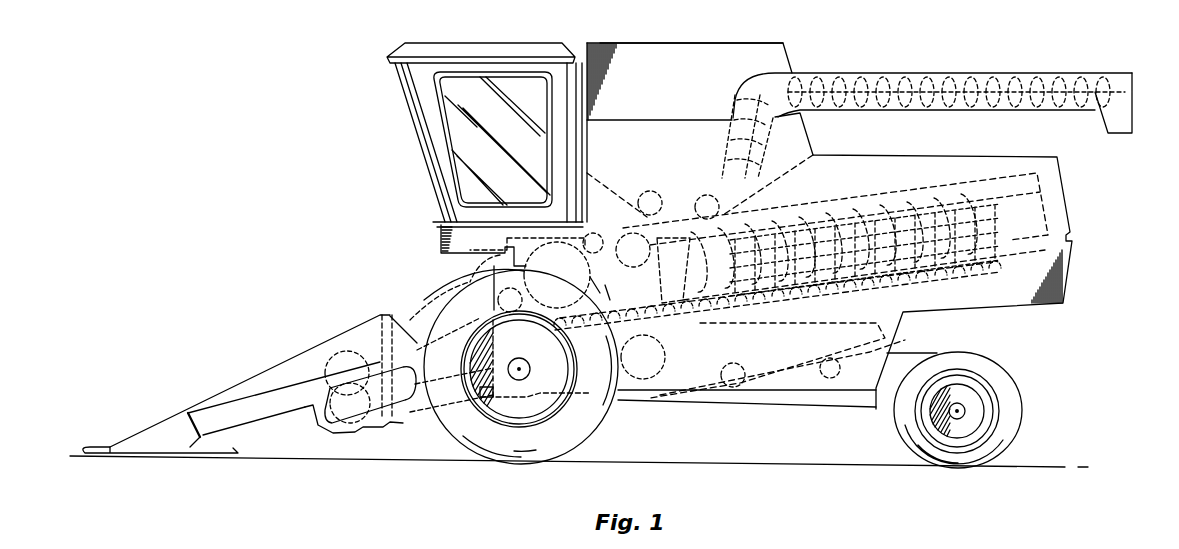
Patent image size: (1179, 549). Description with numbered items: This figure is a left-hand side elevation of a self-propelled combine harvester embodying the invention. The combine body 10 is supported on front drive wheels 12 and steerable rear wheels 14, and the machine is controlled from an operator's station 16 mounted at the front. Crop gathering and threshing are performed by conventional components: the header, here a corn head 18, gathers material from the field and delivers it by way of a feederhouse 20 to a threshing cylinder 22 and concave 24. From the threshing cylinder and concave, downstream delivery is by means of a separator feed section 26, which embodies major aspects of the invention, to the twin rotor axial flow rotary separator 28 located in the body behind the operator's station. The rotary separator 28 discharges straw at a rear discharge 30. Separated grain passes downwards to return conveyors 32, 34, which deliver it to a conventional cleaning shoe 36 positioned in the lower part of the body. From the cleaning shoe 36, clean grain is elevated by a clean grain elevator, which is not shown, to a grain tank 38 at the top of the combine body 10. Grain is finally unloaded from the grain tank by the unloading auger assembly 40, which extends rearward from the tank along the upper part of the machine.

The combine body 10 is at (975, 143).
The front drive wheels 12 is at (600, 430).
The steerable rear wheels 14 is at (1022, 412).
The operator's station 16 is at (403, 97).
The corn head 18 is at (270, 355).
The feederhouse 20 is at (431, 287).
The threshing cylinder 22 is at (503, 238).
The concave 24 is at (777, 284).
The separator feed section 26 is at (723, 233).
The twin rotor axial flow rotary separator 28 is at (861, 198).
The rear discharge 30 is at (1040, 212).
The return conveyor 32 is at (535, 372).
The return conveyor 34 is at (938, 283).
The cleaning shoe 36 is at (775, 362).
The grain tank 38 is at (709, 12).
The unloading auger assembly 40 is at (893, 73).